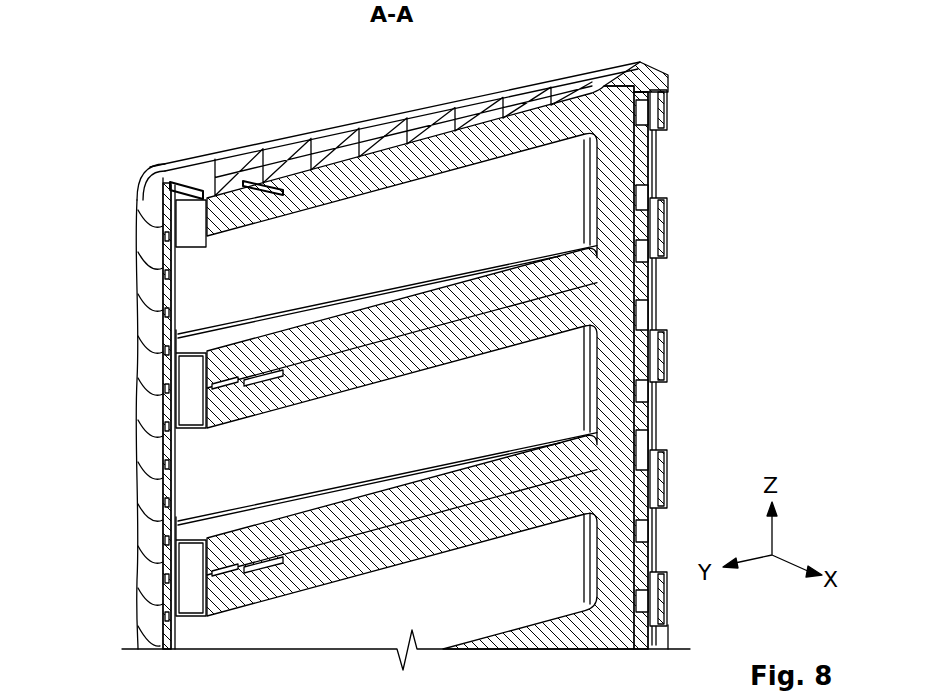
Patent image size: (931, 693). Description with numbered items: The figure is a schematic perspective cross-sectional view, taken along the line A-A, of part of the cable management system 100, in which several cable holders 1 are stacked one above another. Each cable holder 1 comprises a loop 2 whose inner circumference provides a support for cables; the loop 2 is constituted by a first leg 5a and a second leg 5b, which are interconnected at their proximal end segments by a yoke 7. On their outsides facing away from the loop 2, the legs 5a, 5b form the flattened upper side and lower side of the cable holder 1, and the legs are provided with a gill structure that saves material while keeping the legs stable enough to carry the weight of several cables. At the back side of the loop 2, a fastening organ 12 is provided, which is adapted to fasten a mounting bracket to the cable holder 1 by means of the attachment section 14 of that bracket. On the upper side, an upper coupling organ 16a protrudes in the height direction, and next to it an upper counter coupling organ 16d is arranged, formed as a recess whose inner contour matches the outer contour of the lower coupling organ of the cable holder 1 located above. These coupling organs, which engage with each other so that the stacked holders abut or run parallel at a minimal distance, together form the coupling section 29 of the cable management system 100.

The cable management system 100 is at (126, 73).
The cable holder 1 is at (243, 220).
The loop 2 is at (385, 222).
The first leg 5a is at (418, 167).
The second leg 5b is at (460, 300).
The yoke 7 is at (640, 170).
The fastening organ 12 is at (640, 67).
The attachment section 14 is at (657, 97).
The upper coupling organ 16a is at (222, 186).
The upper counter coupling organ 16d is at (257, 183).
The coupling section 29 is at (243, 378).